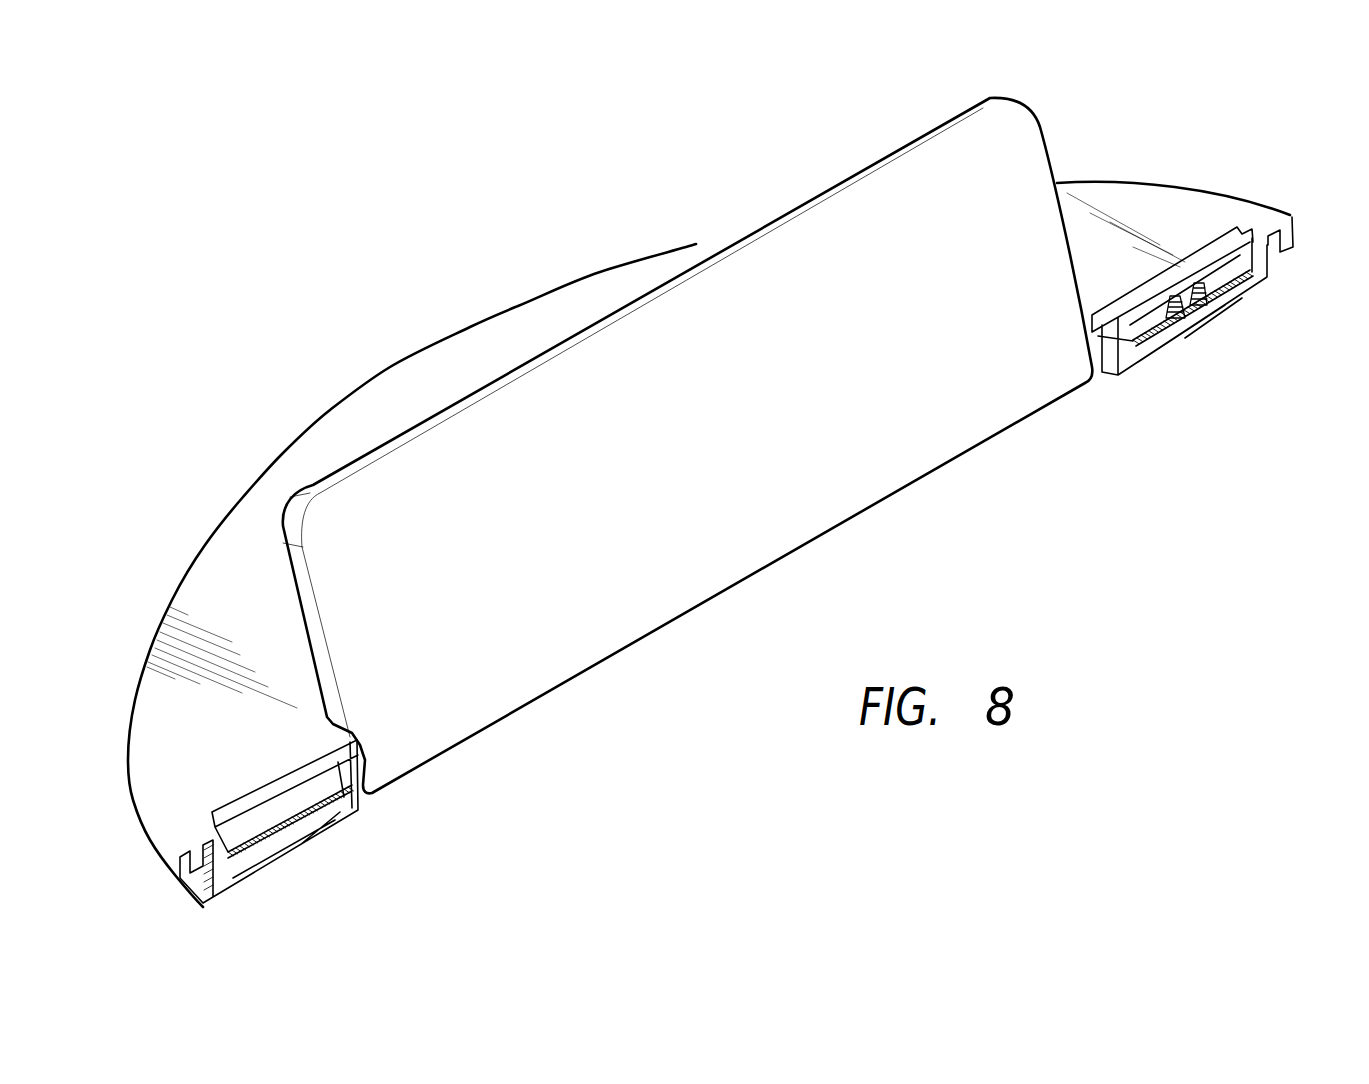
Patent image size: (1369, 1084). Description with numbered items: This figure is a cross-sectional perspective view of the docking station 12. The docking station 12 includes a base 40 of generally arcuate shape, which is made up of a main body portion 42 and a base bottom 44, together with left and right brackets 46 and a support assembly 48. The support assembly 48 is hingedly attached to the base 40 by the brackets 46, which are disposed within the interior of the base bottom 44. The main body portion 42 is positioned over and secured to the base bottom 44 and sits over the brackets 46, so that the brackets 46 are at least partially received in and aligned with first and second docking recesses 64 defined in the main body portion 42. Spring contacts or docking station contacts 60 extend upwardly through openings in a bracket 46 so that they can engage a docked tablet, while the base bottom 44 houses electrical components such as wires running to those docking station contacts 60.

The docking station 12 is at (374, 323).
The base 40 is at (512, 333).
The main body portion 42 is at (1137, 200).
The base bottom 44 is at (1280, 283).
The brackets 46 is at (280, 823).
The support assembly 48 is at (696, 303).
The docking station contacts 60 is at (1198, 283).
The docking recesses 64 is at (224, 818).